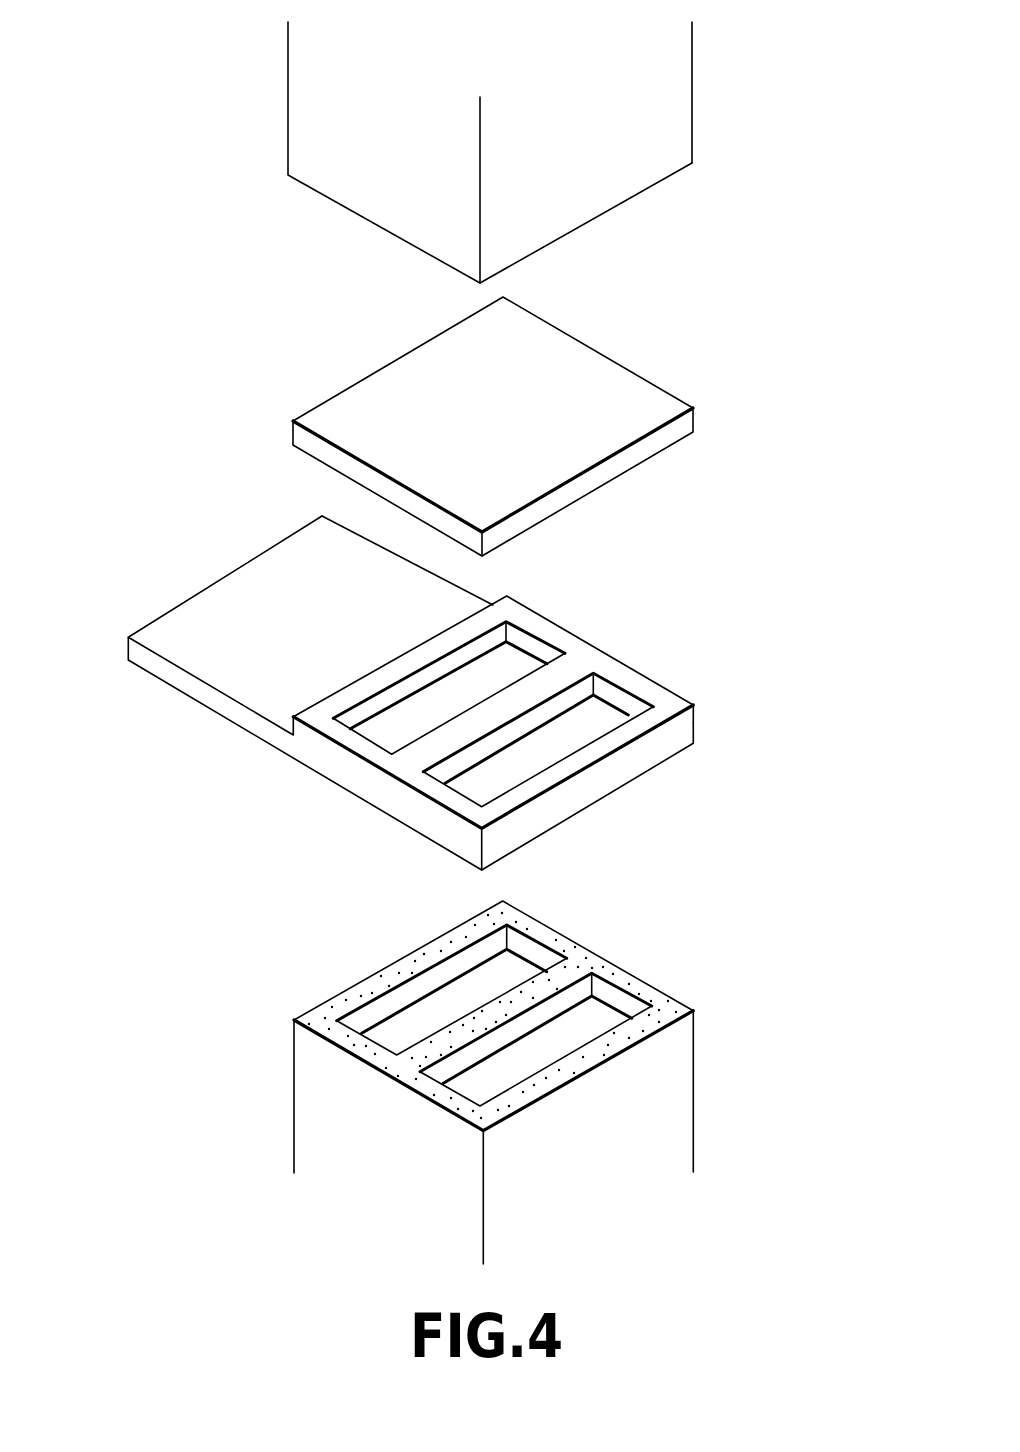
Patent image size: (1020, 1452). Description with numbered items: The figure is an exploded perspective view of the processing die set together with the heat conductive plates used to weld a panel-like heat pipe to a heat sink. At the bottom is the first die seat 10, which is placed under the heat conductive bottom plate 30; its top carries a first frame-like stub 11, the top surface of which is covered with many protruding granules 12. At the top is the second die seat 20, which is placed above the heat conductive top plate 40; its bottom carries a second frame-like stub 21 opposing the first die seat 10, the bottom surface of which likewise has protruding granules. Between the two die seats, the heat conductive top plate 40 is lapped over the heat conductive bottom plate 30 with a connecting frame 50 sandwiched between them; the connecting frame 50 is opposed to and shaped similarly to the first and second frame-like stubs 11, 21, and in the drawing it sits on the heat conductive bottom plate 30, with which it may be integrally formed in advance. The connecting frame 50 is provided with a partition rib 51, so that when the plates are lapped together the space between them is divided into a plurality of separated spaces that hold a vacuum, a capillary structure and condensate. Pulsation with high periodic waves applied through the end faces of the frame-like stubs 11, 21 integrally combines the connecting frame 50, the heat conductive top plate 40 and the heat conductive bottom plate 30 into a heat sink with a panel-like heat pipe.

The first die seat 10 is at (481, 1082).
The first frame-like stub 11 is at (353, 992).
The protruding granules 12 is at (658, 1035).
The second die seat 20 is at (298, 139).
The second frame-like stub 21 is at (603, 215).
The heat conductive bottom plate 30 is at (313, 770).
The heat conductive top plate 40 is at (380, 390).
The connecting frame 50 is at (501, 719).
The partition rib 51 is at (525, 705).